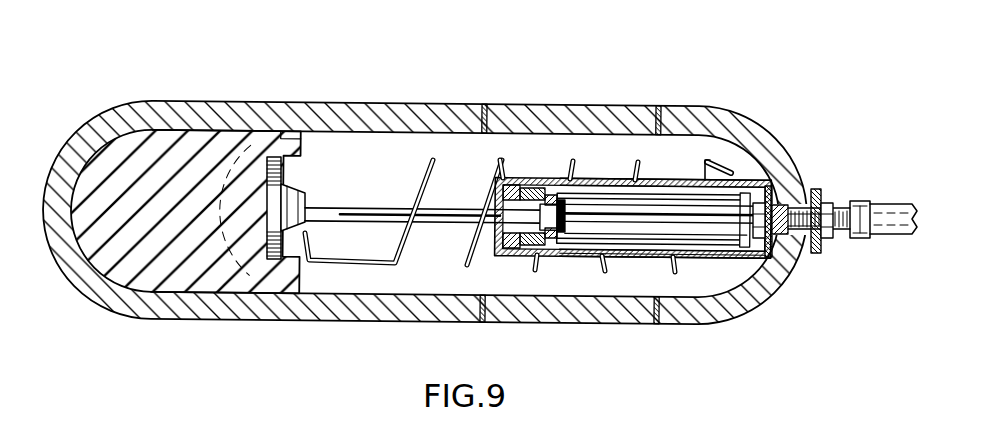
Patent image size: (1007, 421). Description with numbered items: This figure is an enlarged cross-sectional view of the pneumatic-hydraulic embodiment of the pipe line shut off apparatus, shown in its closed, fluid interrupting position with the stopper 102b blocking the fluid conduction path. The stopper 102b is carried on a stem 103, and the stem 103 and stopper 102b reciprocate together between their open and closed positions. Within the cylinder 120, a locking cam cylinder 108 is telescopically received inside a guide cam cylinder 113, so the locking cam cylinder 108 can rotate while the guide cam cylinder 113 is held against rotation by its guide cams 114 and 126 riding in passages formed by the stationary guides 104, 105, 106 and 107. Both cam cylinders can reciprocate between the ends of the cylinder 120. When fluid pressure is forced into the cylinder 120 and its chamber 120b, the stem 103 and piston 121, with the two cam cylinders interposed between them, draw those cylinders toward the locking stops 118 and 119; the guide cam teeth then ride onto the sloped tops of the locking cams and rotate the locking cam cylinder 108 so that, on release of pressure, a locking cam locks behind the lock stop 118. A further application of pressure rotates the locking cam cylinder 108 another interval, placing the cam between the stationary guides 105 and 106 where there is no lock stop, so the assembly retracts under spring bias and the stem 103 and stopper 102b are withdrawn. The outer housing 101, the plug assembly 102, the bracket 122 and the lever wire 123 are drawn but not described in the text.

The outer shell housing 101 is at (765, 127).
The end plug 102 is at (301, 270).
The stopper 102b is at (137, 150).
The stem 103 is at (348, 206).
The stationary guide 104 is at (763, 183).
The stationary guide 105 is at (771, 188).
The stationary guide 106 is at (799, 259).
The stationary guide 107 is at (770, 260).
The locking cam cylinder 108 is at (497, 257).
The guide cam cylinder 113 is at (546, 200).
The guide cam 114 is at (545, 247).
The locking stop 118 is at (518, 244).
The locking stop 119 is at (512, 180).
The cylinder 120 is at (598, 179).
The chamber 120b is at (645, 272).
The piston 121 is at (562, 198).
The bracket pin 122 is at (706, 174).
The lever wire 123 is at (481, 252).
The guide cam 126 is at (523, 186).